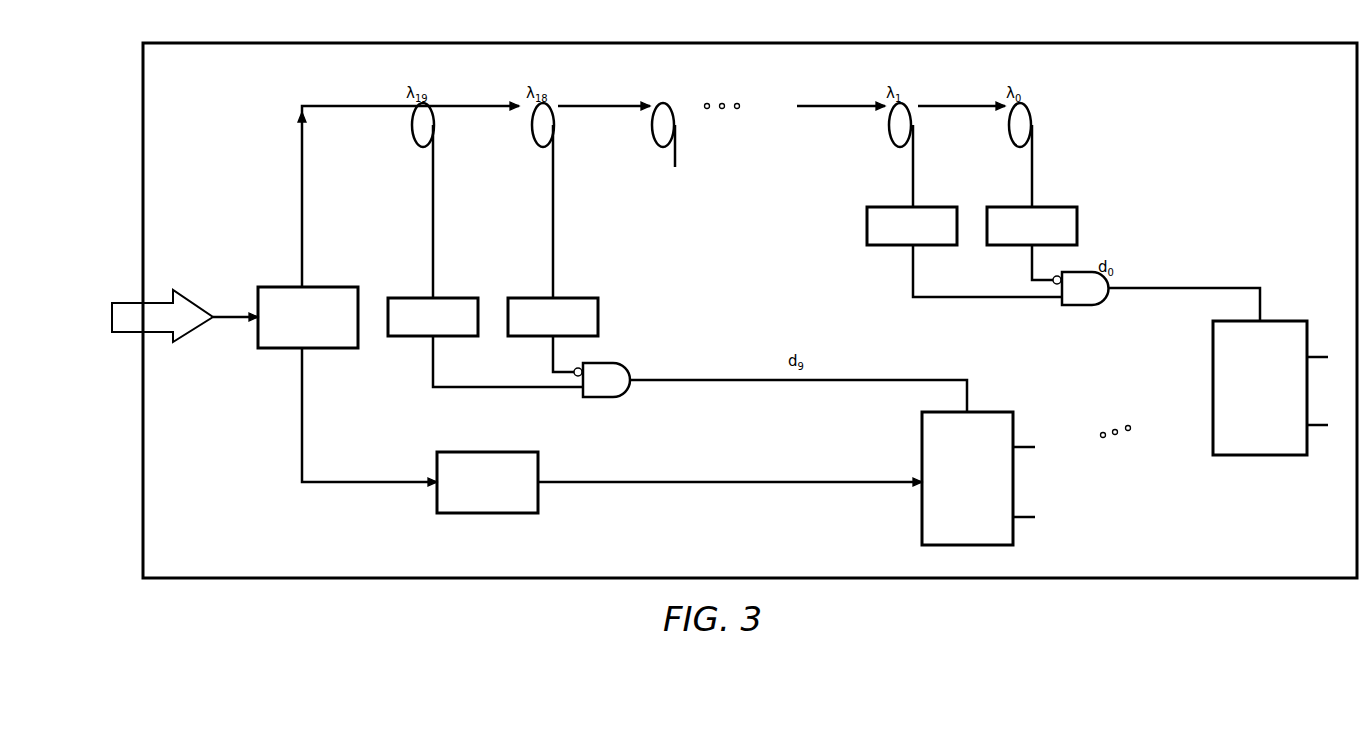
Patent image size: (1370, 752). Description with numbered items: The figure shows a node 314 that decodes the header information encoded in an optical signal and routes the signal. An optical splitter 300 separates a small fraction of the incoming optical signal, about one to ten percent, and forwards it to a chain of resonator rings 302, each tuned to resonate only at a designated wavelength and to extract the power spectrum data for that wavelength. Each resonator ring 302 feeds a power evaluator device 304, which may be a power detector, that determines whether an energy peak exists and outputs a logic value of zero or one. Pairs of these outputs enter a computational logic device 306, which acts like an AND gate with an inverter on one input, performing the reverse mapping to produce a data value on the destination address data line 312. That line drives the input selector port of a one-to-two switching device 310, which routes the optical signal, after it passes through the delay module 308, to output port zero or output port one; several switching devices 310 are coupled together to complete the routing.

The optical splitter 300 is at (258, 288).
The resonator ring 302 is at (436, 122).
The power evaluator device 304 is at (600, 317).
The computational logic device 306 is at (600, 397).
The delay module 308 is at (540, 468).
The 1:2 switching device 310 is at (922, 444).
The destination address data line 312 is at (882, 378).
The node 314 is at (142, 451).